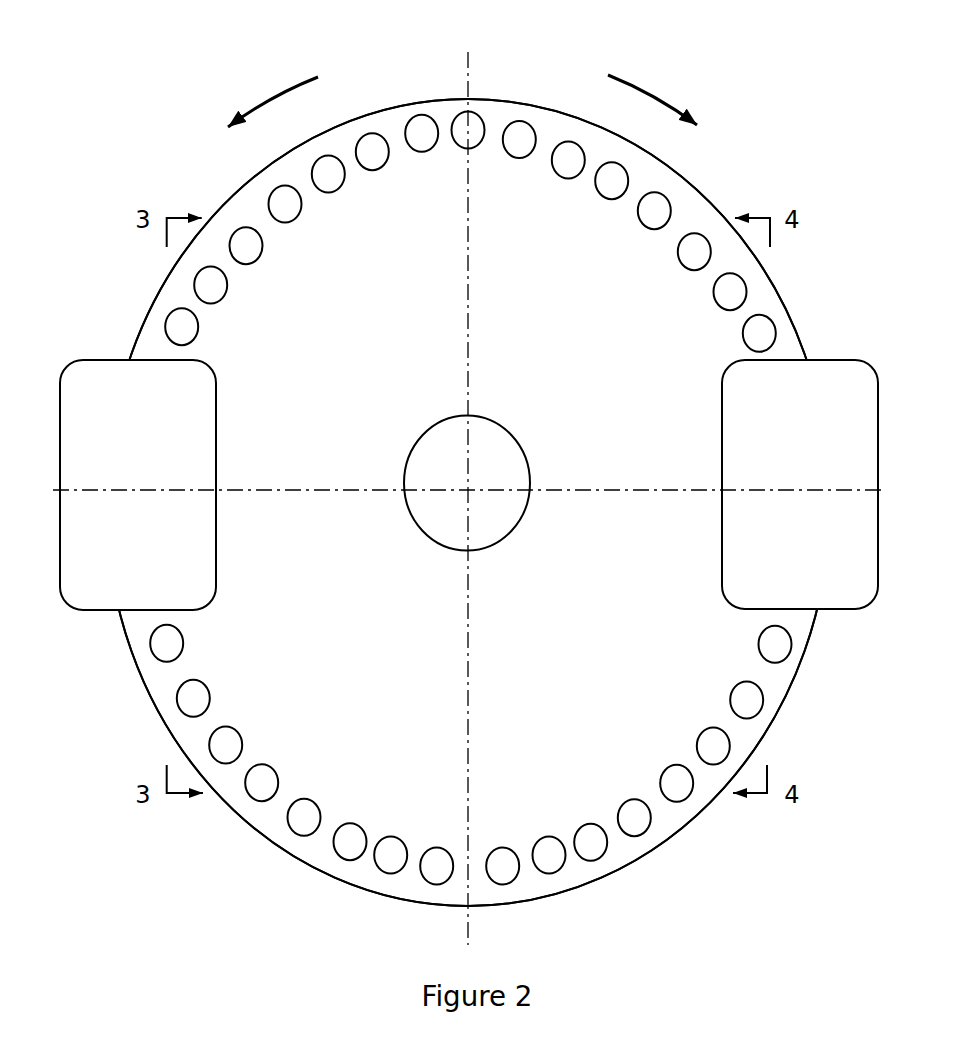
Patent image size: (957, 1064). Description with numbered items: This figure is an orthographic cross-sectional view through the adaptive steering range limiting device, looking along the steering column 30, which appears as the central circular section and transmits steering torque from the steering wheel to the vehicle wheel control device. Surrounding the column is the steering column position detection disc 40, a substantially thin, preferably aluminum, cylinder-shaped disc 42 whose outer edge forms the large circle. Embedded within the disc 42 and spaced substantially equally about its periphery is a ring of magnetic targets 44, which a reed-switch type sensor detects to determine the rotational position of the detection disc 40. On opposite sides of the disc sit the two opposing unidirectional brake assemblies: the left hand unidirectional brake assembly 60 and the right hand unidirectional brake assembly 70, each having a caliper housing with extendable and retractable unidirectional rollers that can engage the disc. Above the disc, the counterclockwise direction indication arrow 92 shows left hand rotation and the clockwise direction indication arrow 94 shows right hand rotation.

The steering column 30 is at (512, 538).
The steering column position detection disc 40 is at (430, 83).
The disc 42 is at (633, 868).
The magnetic targets 44 is at (293, 833).
The left hand unidirectional brake assembly 60 is at (123, 355).
The right hand unidirectional brake assembly 70 is at (815, 353).
The counterclockwise direction indication arrow 92 is at (247, 97).
The clockwise direction indication arrow 94 is at (683, 98).